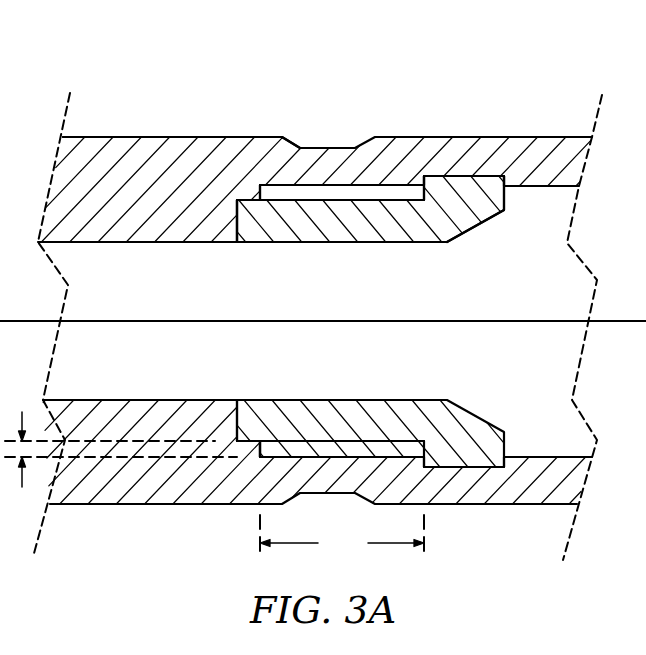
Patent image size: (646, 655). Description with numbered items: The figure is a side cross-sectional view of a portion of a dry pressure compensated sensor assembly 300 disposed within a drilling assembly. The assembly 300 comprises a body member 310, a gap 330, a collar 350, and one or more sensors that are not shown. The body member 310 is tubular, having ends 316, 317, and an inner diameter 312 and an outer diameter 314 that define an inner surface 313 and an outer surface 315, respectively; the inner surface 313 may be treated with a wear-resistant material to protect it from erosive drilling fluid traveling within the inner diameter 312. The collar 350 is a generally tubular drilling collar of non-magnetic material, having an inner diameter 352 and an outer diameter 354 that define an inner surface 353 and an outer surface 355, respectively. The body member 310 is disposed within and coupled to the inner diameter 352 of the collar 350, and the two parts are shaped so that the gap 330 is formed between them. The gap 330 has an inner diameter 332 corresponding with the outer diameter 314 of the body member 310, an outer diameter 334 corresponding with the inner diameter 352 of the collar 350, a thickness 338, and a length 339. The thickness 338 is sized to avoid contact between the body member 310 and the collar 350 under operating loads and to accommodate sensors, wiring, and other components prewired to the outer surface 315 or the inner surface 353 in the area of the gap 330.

The dry pressure compensated sensor assembly 300 is at (124, 68).
The body member 310 is at (393, 232).
The inner diameter 312 is at (321, 276).
The inner surface 313 is at (313, 243).
The outer diameter 314 is at (352, 252).
The outer surface 315 is at (343, 202).
The end 316 is at (237, 243).
The end 317 is at (505, 212).
The gap 330 is at (327, 195).
The inner diameter 332 is at (297, 440).
The outer diameter 334 is at (340, 184).
The thickness 338 is at (121, 462).
The length 339 is at (342, 534).
The collar 350 is at (431, 152).
The inner diameter 352 is at (387, 135).
The inner surface 353 is at (373, 183).
The outer diameter 354 is at (181, 125).
The outer surface 355 is at (282, 137).